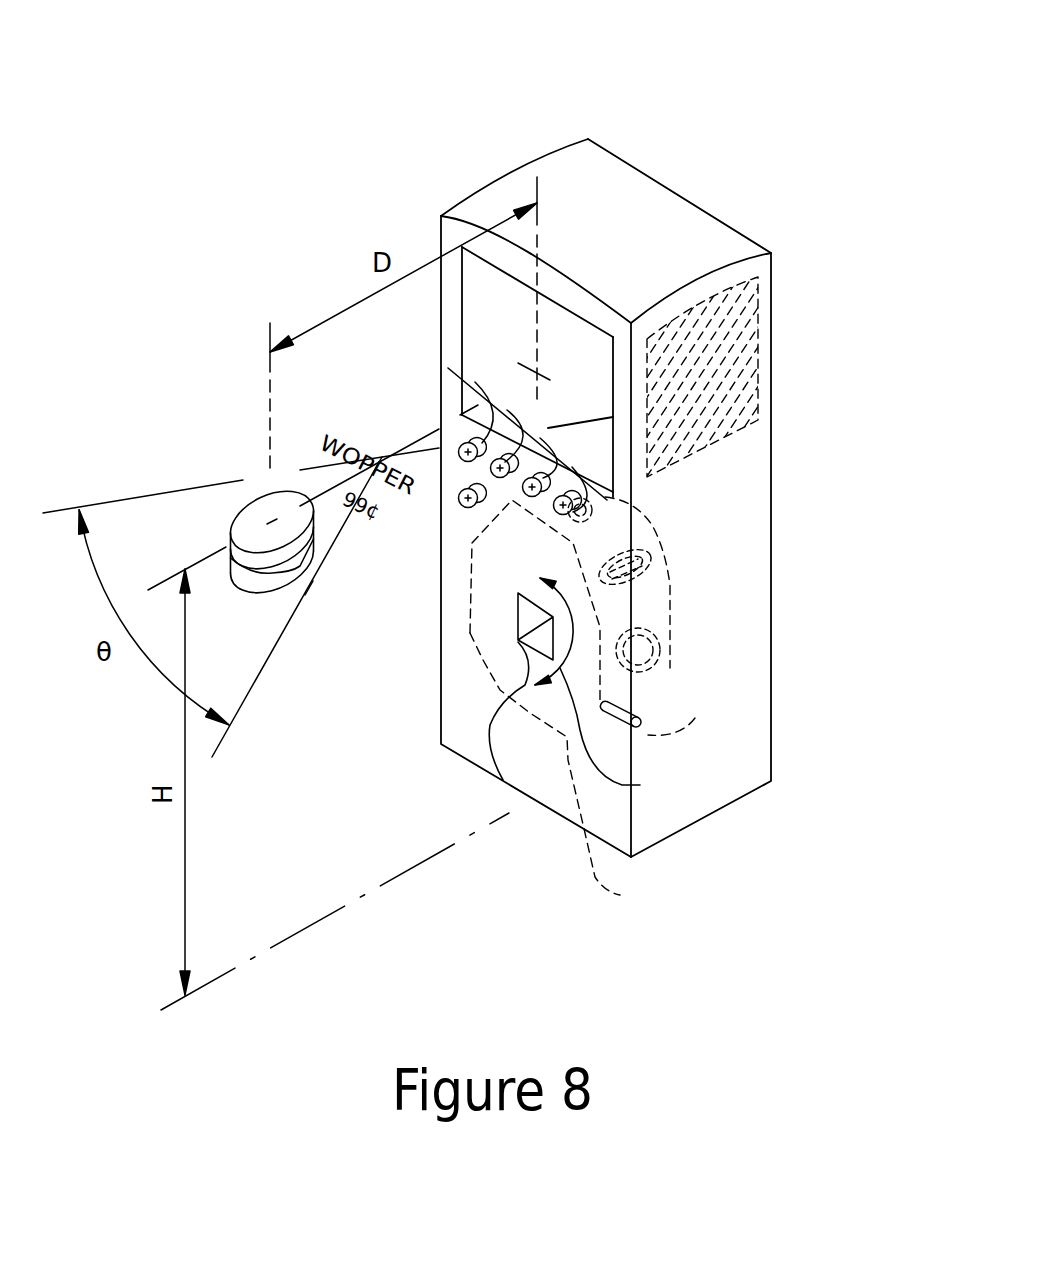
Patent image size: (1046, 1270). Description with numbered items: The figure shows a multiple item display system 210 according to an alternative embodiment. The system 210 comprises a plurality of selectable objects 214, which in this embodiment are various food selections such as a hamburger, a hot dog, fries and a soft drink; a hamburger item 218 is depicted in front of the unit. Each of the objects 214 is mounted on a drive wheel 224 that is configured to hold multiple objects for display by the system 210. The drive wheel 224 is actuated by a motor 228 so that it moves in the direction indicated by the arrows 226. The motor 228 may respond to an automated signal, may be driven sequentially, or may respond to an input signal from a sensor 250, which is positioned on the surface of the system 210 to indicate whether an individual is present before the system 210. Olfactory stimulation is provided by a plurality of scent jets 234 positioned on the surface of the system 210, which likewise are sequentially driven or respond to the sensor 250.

The system 210 is at (377, 125).
The selectable objects 214 is at (640, 527).
The food item display (hamburger) 218 is at (243, 510).
The drive wheel 224 is at (620, 895).
The arrows 226 is at (640, 785).
The motor 228 is at (503, 780).
The scent jets 234 is at (448, 368).
The sensor 250 is at (458, 500).